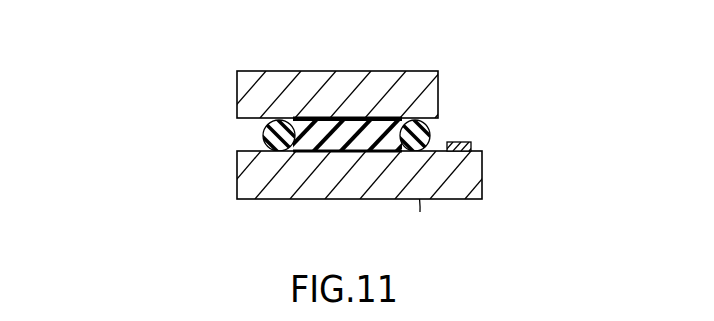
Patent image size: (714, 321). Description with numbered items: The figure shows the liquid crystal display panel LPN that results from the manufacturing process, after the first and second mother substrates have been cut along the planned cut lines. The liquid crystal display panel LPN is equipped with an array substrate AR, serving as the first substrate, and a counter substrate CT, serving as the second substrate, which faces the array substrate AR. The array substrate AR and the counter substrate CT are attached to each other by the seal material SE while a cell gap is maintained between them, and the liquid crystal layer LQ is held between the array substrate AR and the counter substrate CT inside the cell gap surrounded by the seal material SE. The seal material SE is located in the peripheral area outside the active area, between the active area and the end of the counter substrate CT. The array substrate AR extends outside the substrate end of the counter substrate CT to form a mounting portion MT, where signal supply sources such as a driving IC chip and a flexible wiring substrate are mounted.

The liquid crystal display panel LPN is at (484, 88).
The counter substrate CT is at (228, 97).
The array substrate AR is at (228, 180).
The liquid crystal layer LQ is at (346, 152).
The seal material SE is at (282, 152).
The mounting portion MT is at (460, 142).